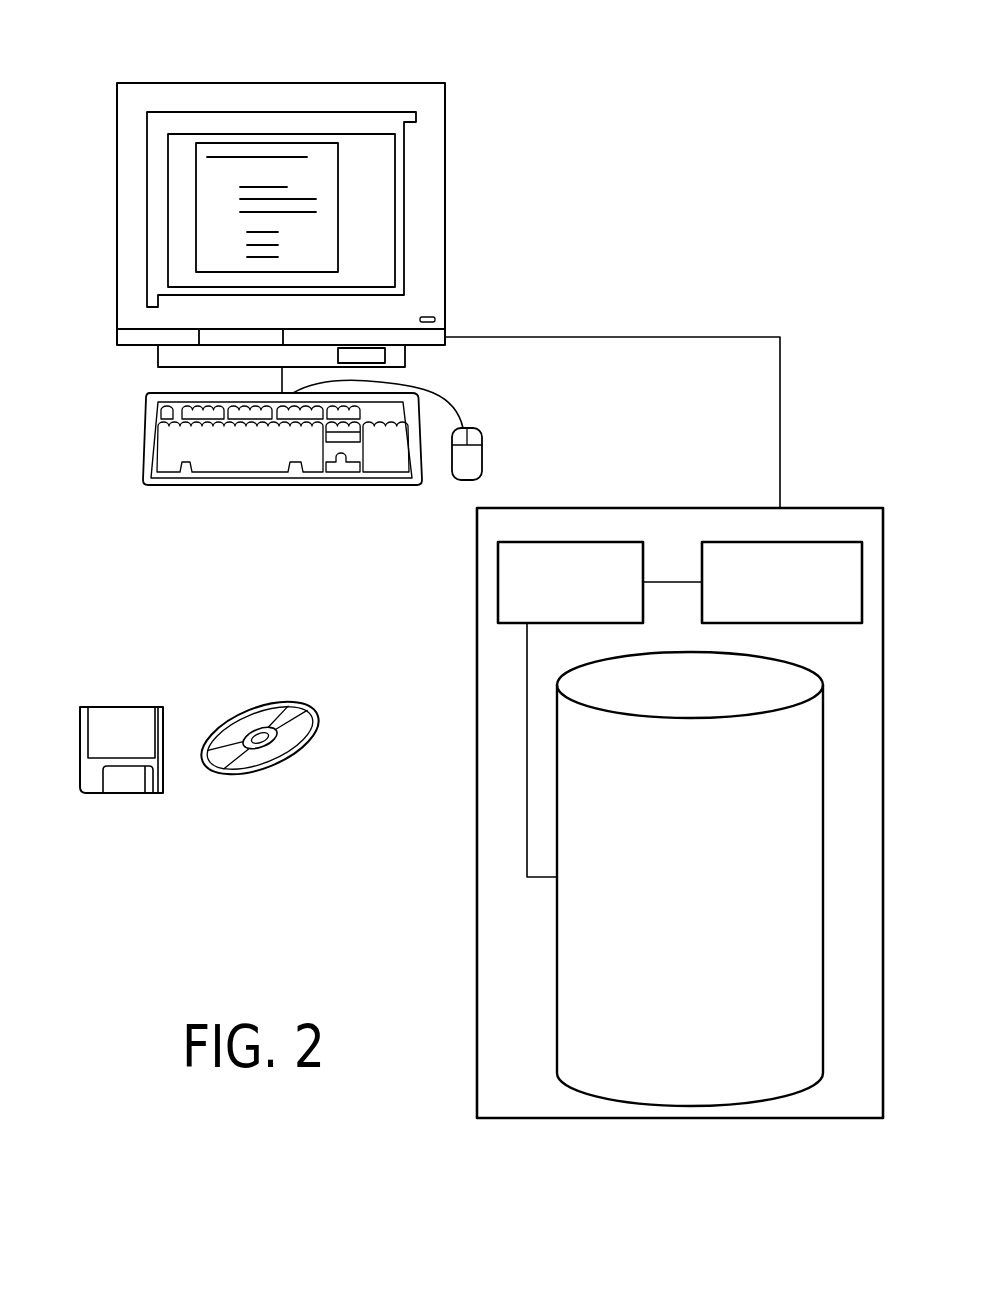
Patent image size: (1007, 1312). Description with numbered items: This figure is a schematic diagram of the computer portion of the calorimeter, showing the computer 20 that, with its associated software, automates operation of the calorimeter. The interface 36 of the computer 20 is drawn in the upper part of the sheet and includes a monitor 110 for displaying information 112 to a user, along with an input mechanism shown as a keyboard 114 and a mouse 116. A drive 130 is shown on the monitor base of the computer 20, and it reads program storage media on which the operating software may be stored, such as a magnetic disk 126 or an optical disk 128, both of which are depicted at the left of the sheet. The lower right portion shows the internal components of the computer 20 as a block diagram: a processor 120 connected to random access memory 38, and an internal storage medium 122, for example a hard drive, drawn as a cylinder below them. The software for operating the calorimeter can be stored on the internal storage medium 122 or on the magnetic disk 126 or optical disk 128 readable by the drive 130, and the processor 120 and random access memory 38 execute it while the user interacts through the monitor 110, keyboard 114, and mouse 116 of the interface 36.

The computer 20 is at (530, 78).
The interface 36 is at (108, 390).
The random access memory 38 is at (498, 568).
The monitor 110 is at (378, 163).
The information 112 is at (318, 227).
The keyboard 114 is at (297, 485).
The mouse 116 is at (475, 435).
The processor 120 is at (733, 540).
The internal storage medium 122 is at (557, 983).
The magnetic disk 126 is at (125, 793).
The optical disk 128 is at (295, 755).
The drive 130 is at (378, 355).